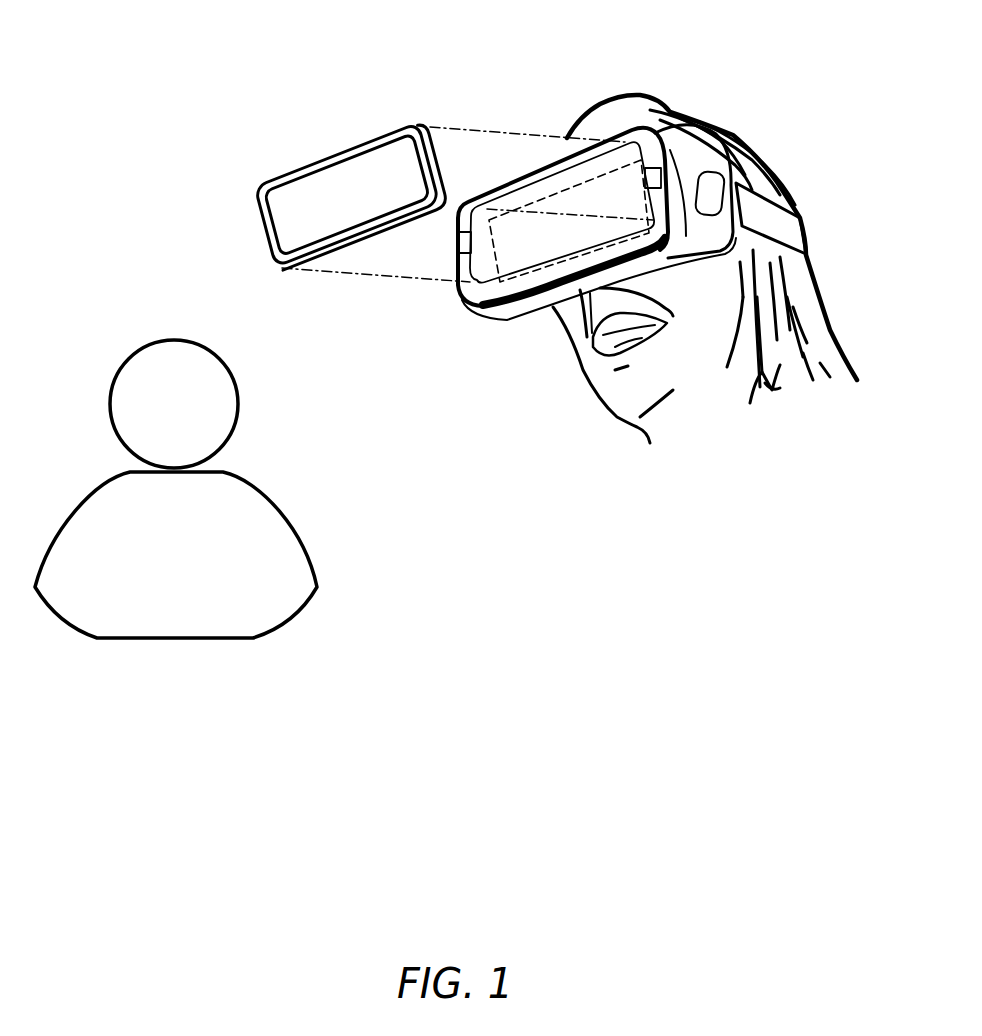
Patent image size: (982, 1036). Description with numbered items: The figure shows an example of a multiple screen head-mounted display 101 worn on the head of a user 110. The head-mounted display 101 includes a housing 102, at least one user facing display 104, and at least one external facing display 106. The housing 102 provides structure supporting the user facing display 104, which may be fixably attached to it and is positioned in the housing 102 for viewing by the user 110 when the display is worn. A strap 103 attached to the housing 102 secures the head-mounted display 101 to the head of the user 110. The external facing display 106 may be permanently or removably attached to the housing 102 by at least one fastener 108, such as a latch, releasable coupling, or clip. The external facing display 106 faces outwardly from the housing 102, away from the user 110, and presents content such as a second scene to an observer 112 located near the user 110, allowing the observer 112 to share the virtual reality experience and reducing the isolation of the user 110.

The head-mounted display 101 is at (770, 68).
The housing 102 is at (514, 321).
The strap 103 is at (806, 230).
The user facing display 104 is at (493, 243).
The external facing display 106 is at (253, 217).
The fastener 108 is at (459, 243).
The user 110 is at (745, 130).
The observer 112 is at (124, 357).